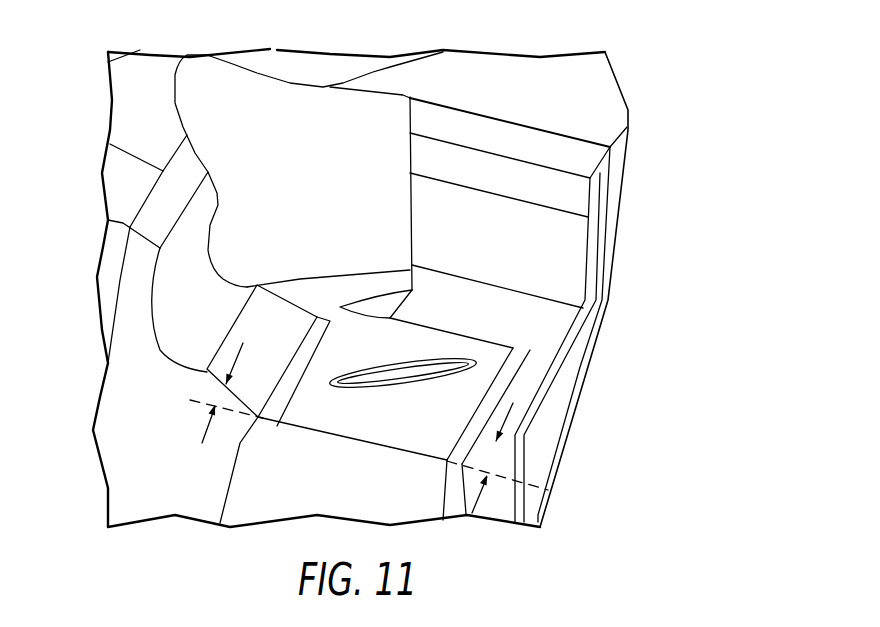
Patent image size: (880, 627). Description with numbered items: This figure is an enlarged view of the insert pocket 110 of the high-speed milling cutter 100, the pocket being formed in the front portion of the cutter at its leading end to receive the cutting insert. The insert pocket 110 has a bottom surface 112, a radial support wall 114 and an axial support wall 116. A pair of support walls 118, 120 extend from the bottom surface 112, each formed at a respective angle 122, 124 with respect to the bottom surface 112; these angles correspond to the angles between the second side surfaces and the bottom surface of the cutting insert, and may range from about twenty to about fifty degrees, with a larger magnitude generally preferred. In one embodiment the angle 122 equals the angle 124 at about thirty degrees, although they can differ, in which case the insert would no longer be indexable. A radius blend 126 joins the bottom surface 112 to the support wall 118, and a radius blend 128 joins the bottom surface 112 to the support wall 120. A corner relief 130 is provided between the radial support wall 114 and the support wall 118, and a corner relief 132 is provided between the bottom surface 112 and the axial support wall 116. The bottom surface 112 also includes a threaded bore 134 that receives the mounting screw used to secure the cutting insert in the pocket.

The milling cutter 100 is at (37, 70).
The insert pocket 110 is at (677, 263).
The bottom surface 112 is at (437, 423).
The radial support wall 114 is at (202, 200).
The axial support wall 116 is at (477, 172).
The support wall 118 is at (258, 333).
The support wall 120 is at (530, 393).
The angle 122 is at (208, 421).
The angle 124 is at (480, 498).
The radius blend 126 is at (273, 400).
The radius blend 128 is at (468, 452).
The corner relief 130 is at (182, 335).
The corner relief 132 is at (477, 310).
The threaded bore 134 is at (395, 378).